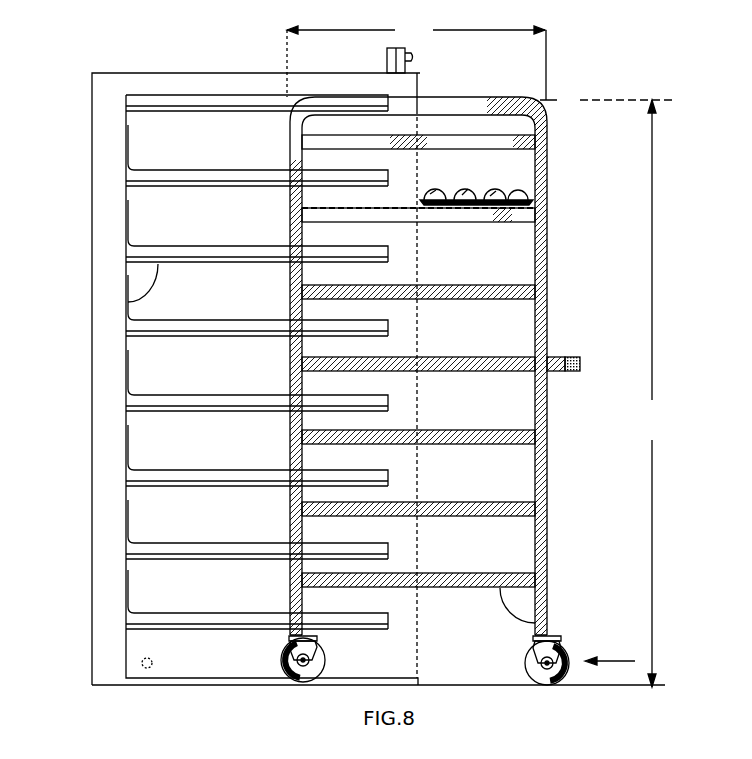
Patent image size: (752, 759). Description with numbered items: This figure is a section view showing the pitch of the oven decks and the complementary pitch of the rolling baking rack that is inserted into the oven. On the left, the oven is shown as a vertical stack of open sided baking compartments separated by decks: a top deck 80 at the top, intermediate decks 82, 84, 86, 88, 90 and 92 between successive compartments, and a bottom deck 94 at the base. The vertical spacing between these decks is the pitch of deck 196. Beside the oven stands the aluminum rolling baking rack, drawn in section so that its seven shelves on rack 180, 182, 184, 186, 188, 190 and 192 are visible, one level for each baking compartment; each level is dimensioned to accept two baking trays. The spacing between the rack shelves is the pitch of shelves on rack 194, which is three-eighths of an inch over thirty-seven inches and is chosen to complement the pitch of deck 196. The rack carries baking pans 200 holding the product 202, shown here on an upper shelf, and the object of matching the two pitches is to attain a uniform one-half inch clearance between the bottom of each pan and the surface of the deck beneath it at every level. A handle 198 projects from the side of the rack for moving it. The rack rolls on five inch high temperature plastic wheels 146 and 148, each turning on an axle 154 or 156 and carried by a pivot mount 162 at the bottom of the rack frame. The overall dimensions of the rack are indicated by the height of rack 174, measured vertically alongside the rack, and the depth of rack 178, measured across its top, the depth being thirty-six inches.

The top deck 80 is at (170, 101).
The intermediate deck 82 is at (170, 176).
The intermediate deck 84 is at (170, 252).
The intermediate deck 86 is at (170, 326).
The intermediate deck 88 is at (170, 401).
The intermediate deck 90 is at (170, 476).
The intermediate deck 92 is at (170, 549).
The bottom deck 94 is at (170, 619).
The pitch of deck 196 is at (126, 287).
The shelf on rack 180 is at (520, 133).
The product 202 is at (500, 188).
The baking pans 200 is at (533, 199).
The shelf on rack 182 is at (532, 211).
The shelf on rack 184 is at (518, 283).
The shelf on rack 186 is at (517, 353).
The handle 198 is at (580, 361).
The shelf on rack 188 is at (517, 429).
The shelf on rack 190 is at (517, 503).
The shelf on rack 192 is at (517, 573).
The pitch of shelves on rack 194 is at (513, 610).
The pivot mount 162 is at (550, 637).
The axle 154 is at (563, 652).
The wheel 148 is at (543, 683).
The axle 156 is at (287, 655).
The wheel 146 is at (285, 673).
The depth of rack 178 is at (422, 61).
The height of rack 174 is at (626, 393).